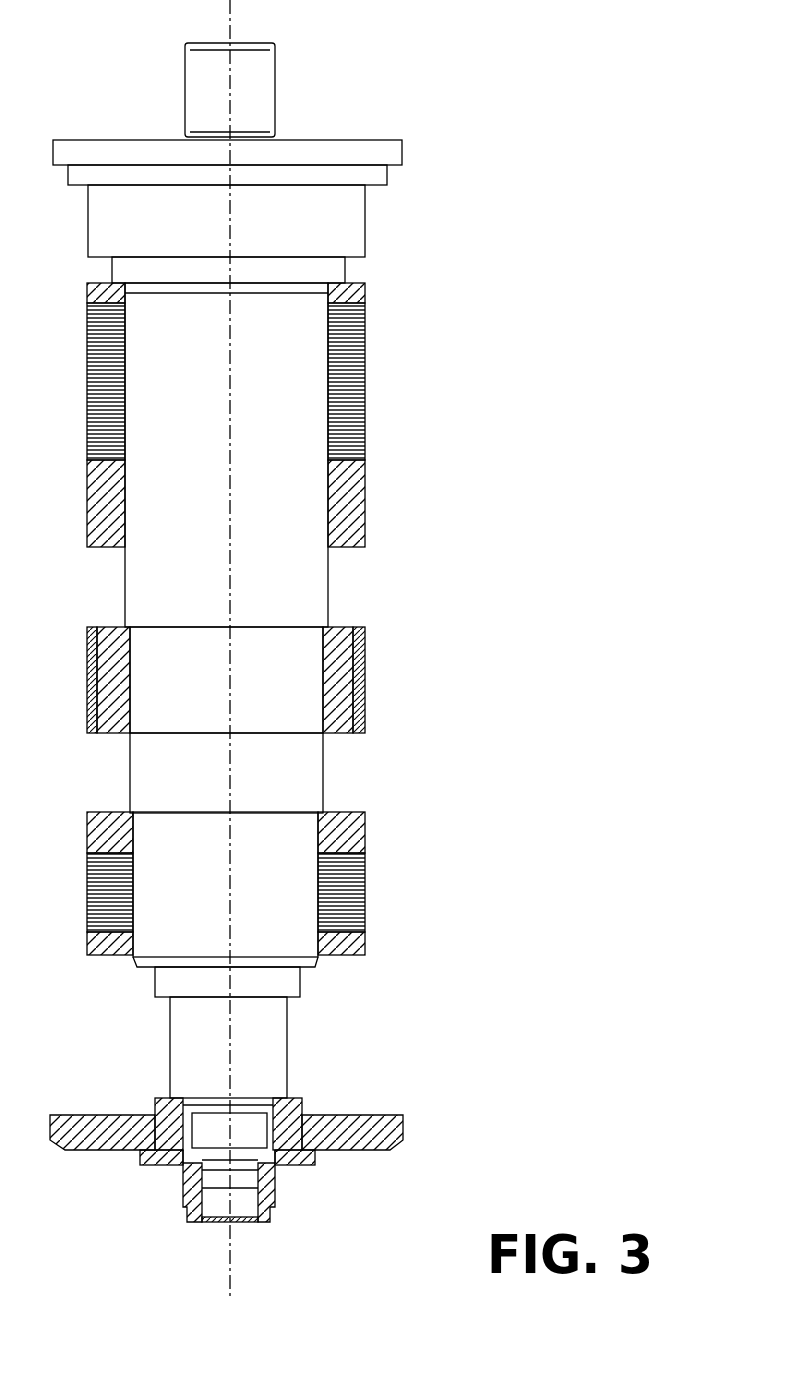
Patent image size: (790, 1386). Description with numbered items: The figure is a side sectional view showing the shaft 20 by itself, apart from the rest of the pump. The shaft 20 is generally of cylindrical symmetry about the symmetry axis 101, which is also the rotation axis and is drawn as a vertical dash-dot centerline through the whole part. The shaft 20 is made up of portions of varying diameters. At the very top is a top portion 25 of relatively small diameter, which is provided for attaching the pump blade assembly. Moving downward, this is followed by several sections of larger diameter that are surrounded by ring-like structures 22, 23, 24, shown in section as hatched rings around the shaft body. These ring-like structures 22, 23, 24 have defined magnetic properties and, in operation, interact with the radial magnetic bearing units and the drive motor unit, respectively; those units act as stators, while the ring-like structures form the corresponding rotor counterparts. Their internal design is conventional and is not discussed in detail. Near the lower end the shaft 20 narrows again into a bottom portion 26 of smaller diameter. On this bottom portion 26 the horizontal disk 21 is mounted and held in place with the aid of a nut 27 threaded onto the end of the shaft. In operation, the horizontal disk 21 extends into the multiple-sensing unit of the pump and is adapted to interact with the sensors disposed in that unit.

The shaft 20 is at (380, 95).
The horizontal disk 21 is at (363, 1128).
The ring-like structure 22 is at (365, 410).
The ring-like structure 23 is at (330, 703).
The ring-like structure 24 is at (365, 903).
The top portion 25 is at (195, 70).
The bottom portion 26 is at (255, 1073).
The nut 27 is at (275, 1187).
The symmetry axis 101 is at (269, 648).